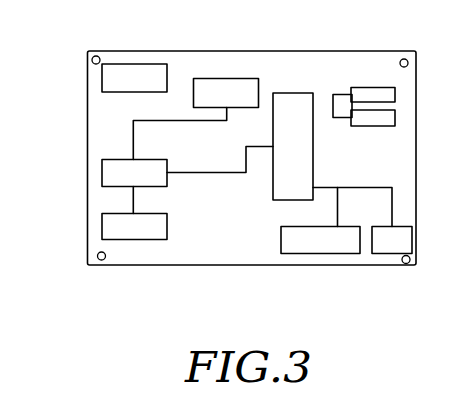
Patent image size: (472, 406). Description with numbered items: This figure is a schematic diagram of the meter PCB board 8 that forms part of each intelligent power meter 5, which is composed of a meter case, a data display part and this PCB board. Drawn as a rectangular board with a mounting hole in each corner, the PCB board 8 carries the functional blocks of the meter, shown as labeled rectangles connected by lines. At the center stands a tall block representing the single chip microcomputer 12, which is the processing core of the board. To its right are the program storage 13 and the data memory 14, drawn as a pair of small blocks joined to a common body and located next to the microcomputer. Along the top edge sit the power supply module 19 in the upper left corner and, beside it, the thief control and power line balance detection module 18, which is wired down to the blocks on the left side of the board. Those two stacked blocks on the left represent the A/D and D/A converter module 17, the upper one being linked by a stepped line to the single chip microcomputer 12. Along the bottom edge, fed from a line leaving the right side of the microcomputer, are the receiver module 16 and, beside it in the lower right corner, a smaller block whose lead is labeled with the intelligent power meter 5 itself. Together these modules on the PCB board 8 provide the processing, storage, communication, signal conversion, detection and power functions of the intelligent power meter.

The intelligent power meter 5 is at (382, 269).
The meter PCB board 8 is at (252, 173).
The single chip microcomputer 12 is at (304, 106).
The program storage 13 is at (382, 66).
The data memory 14 is at (401, 129).
The receiver module 16 is at (310, 267).
The A/D and D/A converter module 17 is at (97, 200).
The thief control and power line balance detection module 18 is at (211, 59).
The power supply module 19 is at (117, 51).